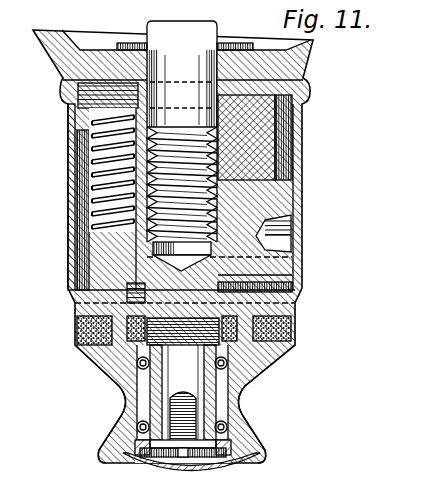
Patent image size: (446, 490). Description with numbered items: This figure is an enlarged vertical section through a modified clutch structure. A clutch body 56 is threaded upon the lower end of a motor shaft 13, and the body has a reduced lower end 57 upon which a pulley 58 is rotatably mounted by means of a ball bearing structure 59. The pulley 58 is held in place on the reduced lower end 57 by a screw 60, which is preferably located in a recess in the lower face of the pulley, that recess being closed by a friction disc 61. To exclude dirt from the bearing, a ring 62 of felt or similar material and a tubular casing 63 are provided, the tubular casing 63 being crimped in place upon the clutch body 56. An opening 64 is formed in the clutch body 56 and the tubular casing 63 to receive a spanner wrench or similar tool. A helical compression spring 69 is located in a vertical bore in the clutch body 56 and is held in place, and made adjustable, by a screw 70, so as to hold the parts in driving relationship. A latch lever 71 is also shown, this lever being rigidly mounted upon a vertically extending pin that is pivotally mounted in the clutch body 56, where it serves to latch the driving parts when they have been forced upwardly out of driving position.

The motor shaft 13 is at (231, 45).
The clutch body 56 is at (284, 197).
The reduced lower end 57 is at (192, 382).
The pulley 58 is at (244, 432).
The ball bearing structure 59 is at (147, 368).
The screw 60 is at (138, 466).
The friction disc 61 is at (166, 469).
The ring 62 is at (95, 342).
The tubular casing 63 is at (76, 246).
The opening 64 is at (274, 232).
The helical compression spring 69 is at (90, 171).
The screw 70 is at (73, 127).
The latch lever 71 is at (264, 138).